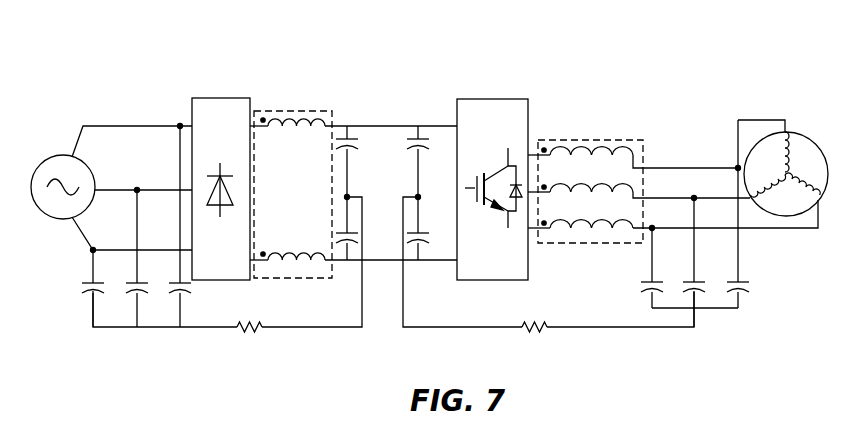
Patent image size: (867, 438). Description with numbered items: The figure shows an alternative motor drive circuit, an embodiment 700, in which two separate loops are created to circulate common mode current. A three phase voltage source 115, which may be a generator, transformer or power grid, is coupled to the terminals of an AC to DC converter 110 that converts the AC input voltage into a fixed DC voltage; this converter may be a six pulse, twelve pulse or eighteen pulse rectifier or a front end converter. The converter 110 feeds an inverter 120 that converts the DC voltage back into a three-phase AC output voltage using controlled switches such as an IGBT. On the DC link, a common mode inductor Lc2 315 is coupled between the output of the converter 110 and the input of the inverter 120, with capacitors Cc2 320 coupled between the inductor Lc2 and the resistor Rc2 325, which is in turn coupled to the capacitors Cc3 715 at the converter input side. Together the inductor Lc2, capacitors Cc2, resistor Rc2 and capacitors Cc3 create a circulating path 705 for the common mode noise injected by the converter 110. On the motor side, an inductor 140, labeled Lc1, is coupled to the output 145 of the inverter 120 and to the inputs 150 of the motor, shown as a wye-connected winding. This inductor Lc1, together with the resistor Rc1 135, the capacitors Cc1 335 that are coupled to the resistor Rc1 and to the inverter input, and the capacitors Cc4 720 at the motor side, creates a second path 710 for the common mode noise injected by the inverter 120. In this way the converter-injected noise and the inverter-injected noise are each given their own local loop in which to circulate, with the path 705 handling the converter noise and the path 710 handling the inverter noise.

The embodiment 700 is at (748, 65).
The AC to DC converter 110 is at (221, 98).
The three phase voltage source 115 is at (62, 155).
The inverter 120 is at (494, 98).
The resistor Rc1 135 is at (550, 328).
The inductor 140 is at (597, 140).
The output of inverter 145 is at (536, 153).
The inputs of motor 150 is at (788, 133).
The common mode inductors Lc2 315 is at (303, 111).
The capacitors Cc2 320 is at (350, 139).
The resistor Rc2 325 is at (262, 332).
The capacitors Cc1 335 is at (420, 139).
The circulating path 705 is at (317, 327).
The path 710 is at (592, 327).
The capacitor Cc3 715 is at (80, 308).
The capacitor Cc4 720 is at (763, 302).
The capacitors Cc1 is at (429, 193).
The capacitors Cc2 is at (366, 193).
The capacitors Cc3 is at (127, 226).
The capacitors Cc4 is at (684, 223).
The inductor Lc1 is at (589, 191).
The common mode inductor Lc2 is at (293, 209).
The resistor Rc1 is at (534, 309).
The resistor Rc2 is at (248, 314).